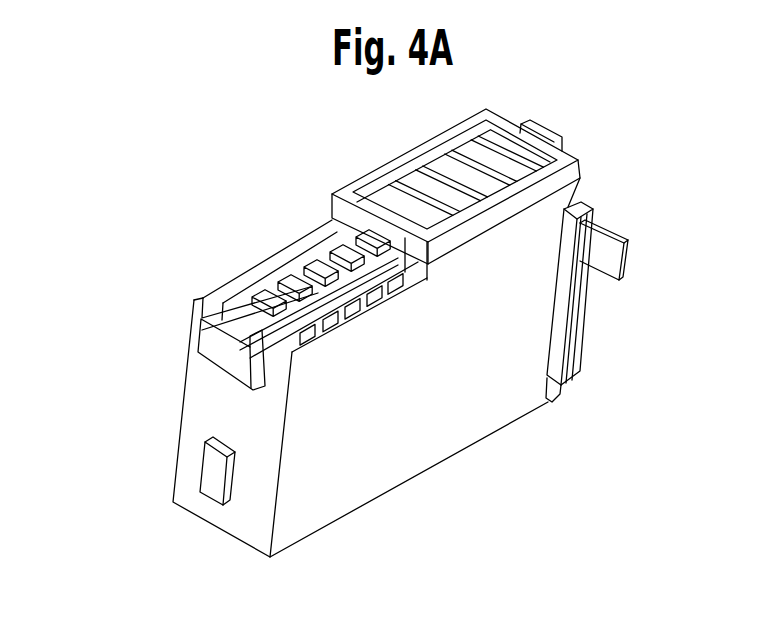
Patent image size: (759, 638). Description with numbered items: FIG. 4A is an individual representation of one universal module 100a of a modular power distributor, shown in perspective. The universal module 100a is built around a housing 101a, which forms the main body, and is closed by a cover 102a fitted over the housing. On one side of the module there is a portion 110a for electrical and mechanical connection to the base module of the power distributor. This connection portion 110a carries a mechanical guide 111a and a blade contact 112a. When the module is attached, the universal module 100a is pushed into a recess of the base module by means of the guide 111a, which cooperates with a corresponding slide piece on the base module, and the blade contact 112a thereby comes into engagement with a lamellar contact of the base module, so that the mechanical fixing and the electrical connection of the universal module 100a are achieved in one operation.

The universal module 100a is at (452, 326).
The housing 101a is at (357, 490).
The cover 102a is at (388, 170).
The portion for electrical and mechanical connection 110a is at (639, 303).
The mechanical guide 111a is at (578, 358).
The blade contact 112a is at (608, 257).